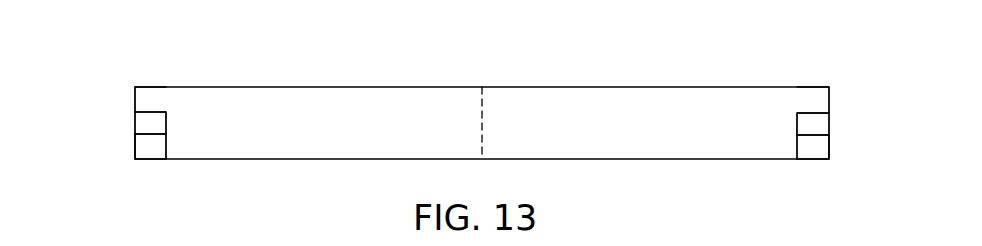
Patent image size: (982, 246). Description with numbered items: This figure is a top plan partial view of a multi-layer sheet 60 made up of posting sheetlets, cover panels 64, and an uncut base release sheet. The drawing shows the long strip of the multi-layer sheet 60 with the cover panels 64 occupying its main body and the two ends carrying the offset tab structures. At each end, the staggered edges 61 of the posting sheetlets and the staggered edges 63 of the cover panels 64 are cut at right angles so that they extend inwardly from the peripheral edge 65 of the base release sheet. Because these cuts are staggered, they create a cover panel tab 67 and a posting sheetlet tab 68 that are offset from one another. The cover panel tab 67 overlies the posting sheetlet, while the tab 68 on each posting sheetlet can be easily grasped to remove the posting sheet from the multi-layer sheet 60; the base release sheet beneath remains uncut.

The multi-layer sheet 60 is at (118, 62).
The staggered edges of posting sheetlets 61 is at (160, 137).
The staggered edges of cover panels 63 is at (150, 110).
The cover panel 64 is at (310, 140).
The peripheral edge of the base release sheet 65 is at (135, 152).
The cover panel tab 67 is at (154, 97).
The posting sheetlet tab 68 is at (142, 127).